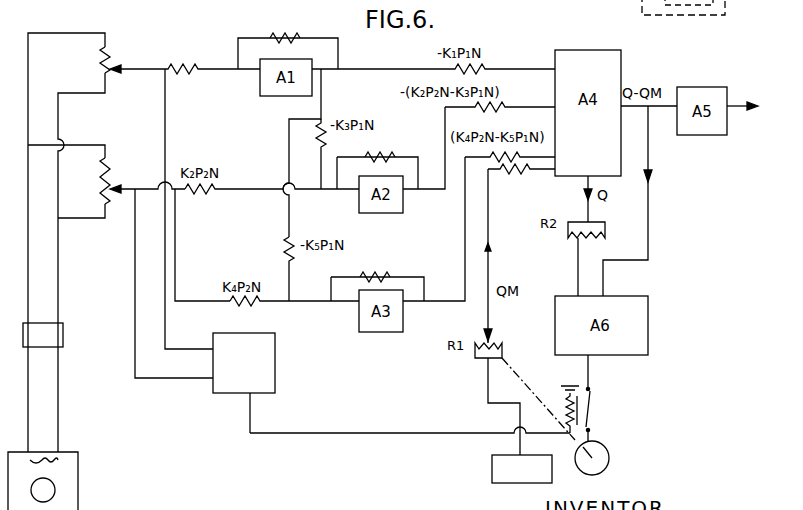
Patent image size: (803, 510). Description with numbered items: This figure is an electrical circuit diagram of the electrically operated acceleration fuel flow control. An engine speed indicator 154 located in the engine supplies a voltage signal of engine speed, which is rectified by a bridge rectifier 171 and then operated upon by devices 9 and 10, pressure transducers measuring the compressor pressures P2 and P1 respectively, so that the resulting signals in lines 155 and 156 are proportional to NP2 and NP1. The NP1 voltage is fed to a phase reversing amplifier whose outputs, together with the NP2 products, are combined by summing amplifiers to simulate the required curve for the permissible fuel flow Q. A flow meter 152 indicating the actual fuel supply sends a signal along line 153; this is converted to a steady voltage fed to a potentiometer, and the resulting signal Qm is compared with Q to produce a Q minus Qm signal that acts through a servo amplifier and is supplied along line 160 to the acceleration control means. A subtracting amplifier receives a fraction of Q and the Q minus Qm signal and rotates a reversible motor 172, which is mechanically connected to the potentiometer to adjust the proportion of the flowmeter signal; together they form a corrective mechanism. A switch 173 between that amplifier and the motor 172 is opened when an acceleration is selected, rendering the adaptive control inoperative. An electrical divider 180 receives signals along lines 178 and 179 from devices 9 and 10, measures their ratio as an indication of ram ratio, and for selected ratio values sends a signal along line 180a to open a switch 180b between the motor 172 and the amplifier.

The pressure transducer 9 is at (114, 176).
The pressure transducer 10 is at (118, 61).
The flow meter 152 is at (510, 466).
The line 153 is at (488, 383).
The engine speed indicator 154 is at (65, 469).
The line 155 is at (145, 188).
The line 156 is at (150, 69).
The line 160 is at (736, 106).
The bridge rectifier 171 is at (63, 338).
The reversible motor 172 is at (609, 458).
The switch 173 is at (591, 374).
The line 178 is at (135, 268).
The line 179 is at (165, 335).
The electrical divider 180 is at (275, 342).
The line 180a is at (401, 434).
The switch 180b is at (595, 419).